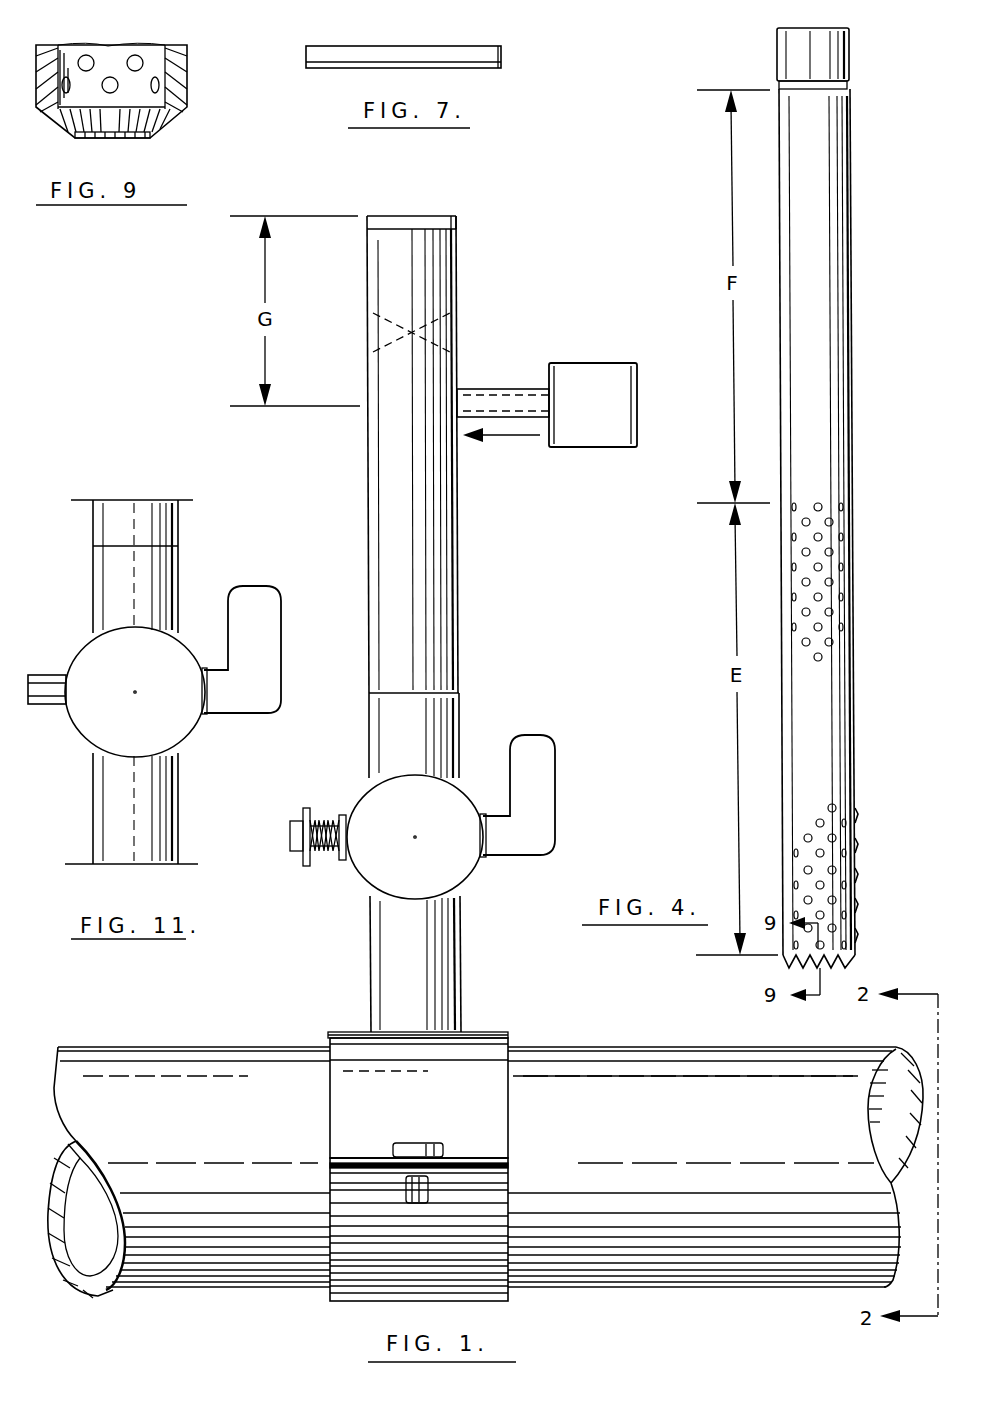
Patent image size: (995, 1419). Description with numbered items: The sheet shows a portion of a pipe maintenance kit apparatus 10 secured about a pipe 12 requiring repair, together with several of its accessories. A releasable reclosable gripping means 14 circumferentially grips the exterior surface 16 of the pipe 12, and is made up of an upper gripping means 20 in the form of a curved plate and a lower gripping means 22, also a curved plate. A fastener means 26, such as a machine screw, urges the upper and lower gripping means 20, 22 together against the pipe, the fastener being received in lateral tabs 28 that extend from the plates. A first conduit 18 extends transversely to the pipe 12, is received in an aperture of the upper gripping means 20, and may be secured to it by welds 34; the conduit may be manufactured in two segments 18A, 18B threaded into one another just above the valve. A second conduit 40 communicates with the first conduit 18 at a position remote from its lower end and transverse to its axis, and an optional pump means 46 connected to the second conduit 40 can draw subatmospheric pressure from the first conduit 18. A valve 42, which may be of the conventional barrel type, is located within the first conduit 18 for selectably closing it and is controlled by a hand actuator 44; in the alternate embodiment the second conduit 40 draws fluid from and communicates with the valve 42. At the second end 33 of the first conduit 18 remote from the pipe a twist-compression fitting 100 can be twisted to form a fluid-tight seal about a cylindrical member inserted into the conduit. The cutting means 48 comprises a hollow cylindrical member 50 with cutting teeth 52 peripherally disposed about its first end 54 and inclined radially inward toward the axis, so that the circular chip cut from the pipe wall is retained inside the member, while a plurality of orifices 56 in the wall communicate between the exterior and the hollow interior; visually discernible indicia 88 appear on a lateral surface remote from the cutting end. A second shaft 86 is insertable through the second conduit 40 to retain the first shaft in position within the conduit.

In FIG. 1, the pipe maintenance apparatus portion 10 is at (429, 605).
In FIG. 1, the pipe 12 is at (557, 1064).
In FIG. 1, the releasable reclosable gripping means 14 is at (514, 1016).
In FIG. 1, the exterior surface 16 is at (664, 1067).
In FIG. 1, the first conduit 18 is at (420, 436).
In FIG. 11, the first conduit 18 is at (156, 520).
In FIG. 1, the first conduit segment 18A is at (437, 647).
In FIG. 1, the first conduit segment 18B is at (424, 963).
In FIG. 1, the upper gripping means 20 is at (338, 1026).
In FIG. 1, the lower gripping means 22 is at (480, 1272).
In FIG. 1, the fastener means 26 is at (403, 1135).
In FIG. 1, the lateral tabs 28 is at (503, 1157).
In FIG. 1, the second end 33 is at (380, 206).
In FIG. 1, the welds 34 is at (470, 1024).
In FIG. 1, the second conduit 40 is at (487, 380).
In FIG. 11, the second conduit 40 is at (37, 673).
In FIG. 1, the valve 42 is at (453, 795).
In FIG. 11, the valve 42 is at (176, 643).
In FIG. 1, the hand actuator 44 is at (535, 777).
In FIG. 1, the pump means 46 is at (592, 439).
In FIG. 4, the cutting means 48 is at (845, 501).
In FIG. 9, the cutting means 48 is at (198, 83).
In FIG. 4, the hollow cylindrical member 50 is at (824, 349).
In FIG. 4, the cutting teeth 52 is at (851, 952).
In FIG. 9, the cutting teeth 52 is at (152, 119).
In FIG. 4, the first end 54 is at (814, 877).
In FIG. 4, the orifices 56 is at (824, 584).
In FIG. 7, the second shaft 86 is at (452, 44).
In FIG. 4, the visually discernible indicia 88 is at (841, 78).
In FIG. 1, the twist-compression fitting 100 is at (447, 208).